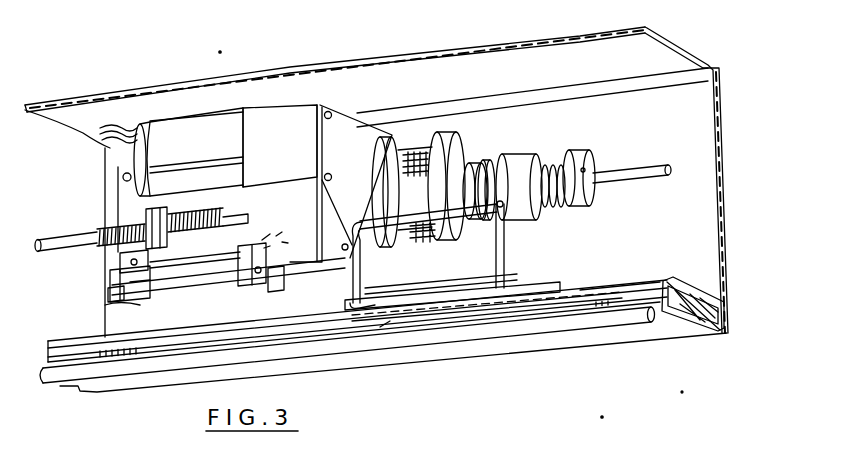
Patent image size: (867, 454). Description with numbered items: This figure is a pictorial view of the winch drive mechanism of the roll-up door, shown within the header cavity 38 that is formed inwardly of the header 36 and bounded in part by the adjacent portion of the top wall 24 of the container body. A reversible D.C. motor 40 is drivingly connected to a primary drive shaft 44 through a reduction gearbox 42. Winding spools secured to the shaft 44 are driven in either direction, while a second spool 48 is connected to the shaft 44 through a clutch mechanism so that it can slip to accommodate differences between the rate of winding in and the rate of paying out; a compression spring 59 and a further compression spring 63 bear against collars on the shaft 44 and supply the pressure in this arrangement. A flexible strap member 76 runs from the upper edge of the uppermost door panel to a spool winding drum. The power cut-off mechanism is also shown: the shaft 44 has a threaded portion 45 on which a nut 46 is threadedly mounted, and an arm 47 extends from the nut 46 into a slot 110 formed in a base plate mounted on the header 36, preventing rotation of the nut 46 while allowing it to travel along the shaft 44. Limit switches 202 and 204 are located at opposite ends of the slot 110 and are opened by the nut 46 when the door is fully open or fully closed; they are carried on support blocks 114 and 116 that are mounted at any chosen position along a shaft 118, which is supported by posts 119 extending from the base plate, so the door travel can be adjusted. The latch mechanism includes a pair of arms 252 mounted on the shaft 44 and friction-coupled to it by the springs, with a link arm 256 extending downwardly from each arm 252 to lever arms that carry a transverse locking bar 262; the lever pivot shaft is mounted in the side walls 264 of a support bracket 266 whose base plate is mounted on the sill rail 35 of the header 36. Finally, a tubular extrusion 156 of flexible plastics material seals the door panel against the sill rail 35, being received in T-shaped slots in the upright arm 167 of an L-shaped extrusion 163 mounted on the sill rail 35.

The top wall 24 is at (362, 72).
The header 36 is at (710, 212).
The header cavity 38 is at (626, 206).
The reversible D.C. motor 40 is at (172, 128).
The reduction gearbox 42 is at (273, 133).
The primary drive shaft 44 is at (68, 234).
The threaded portion 45 is at (100, 234).
The nut 46 is at (160, 213).
The arm 47 is at (188, 280).
The second spool 48 is at (440, 130).
The compression spring 59 is at (478, 162).
The compression spring 63 is at (557, 162).
The second flexible strap member 76 is at (413, 297).
The slot 110 is at (230, 232).
The support block 114 is at (140, 305).
The support block 116 is at (242, 282).
The shaft 118 is at (163, 280).
The posts 119 is at (110, 288).
The tubular extrusion 156 is at (627, 320).
The L-shaped extrusion 163 is at (675, 318).
The upright arm 167 is at (648, 298).
The limit switch 202 is at (118, 266).
The limit switch 204 is at (254, 250).
The arms 252 is at (362, 212).
The link arm 256 is at (358, 292).
The locking bar 262 is at (472, 292).
The side walls 264 is at (533, 288).
The support bracket 266 is at (381, 326).
The sill rail 35 is at (587, 293).